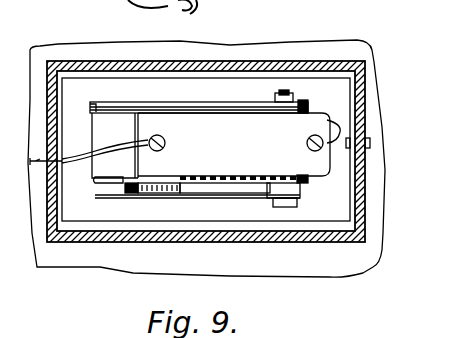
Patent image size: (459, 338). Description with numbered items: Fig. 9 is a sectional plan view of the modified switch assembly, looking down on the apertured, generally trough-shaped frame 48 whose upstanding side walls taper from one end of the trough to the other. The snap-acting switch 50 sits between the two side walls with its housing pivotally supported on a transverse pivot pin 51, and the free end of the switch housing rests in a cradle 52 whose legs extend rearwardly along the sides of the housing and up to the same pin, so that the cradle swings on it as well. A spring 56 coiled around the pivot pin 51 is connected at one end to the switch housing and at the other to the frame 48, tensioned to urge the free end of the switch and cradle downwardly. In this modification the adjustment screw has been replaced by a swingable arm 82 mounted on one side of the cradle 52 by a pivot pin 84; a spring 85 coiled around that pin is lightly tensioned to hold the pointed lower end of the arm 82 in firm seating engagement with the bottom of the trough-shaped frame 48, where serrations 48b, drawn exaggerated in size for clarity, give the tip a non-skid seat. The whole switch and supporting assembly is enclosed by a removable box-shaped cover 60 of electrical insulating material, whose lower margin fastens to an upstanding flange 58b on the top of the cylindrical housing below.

The trough-shaped frame 48 is at (147, 103).
The serrations 48b is at (182, 190).
The snap-acting switch 50 is at (239, 144).
The transverse pivot pin 51 is at (288, 91).
The cradle 52 is at (115, 145).
The spring 56 is at (240, 188).
The upstanding flange 58b is at (353, 97).
The cover 60 is at (244, 61).
The swingable arm 82 is at (124, 195).
The pivot pin 84 is at (89, 156).
The spring 85 is at (143, 170).